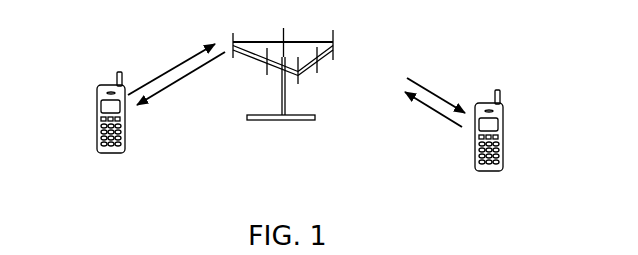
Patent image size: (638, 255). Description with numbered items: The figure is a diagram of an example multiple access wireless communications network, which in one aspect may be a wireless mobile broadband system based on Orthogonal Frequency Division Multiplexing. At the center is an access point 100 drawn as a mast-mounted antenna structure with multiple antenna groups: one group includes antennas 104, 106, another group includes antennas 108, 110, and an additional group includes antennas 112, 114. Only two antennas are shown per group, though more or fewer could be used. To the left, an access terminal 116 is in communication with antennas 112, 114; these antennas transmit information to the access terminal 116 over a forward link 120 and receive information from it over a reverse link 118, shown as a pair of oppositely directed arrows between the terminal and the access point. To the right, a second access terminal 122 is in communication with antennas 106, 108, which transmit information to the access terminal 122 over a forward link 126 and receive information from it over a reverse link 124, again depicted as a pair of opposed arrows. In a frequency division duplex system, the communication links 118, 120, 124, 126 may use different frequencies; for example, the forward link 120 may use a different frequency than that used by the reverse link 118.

The access point 100 is at (273, 120).
The antenna 104 is at (302, 80).
The antenna 106 is at (319, 67).
The antenna 108 is at (335, 52).
The antenna 110 is at (287, 34).
The antenna 112 is at (232, 33).
The antenna 114 is at (268, 68).
The access terminal 116 is at (98, 102).
The reverse link 118 is at (180, 65).
The forward link 120 is at (172, 88).
The access terminal 122 is at (511, 130).
The reverse link 124 is at (440, 117).
The forward link 126 is at (433, 93).